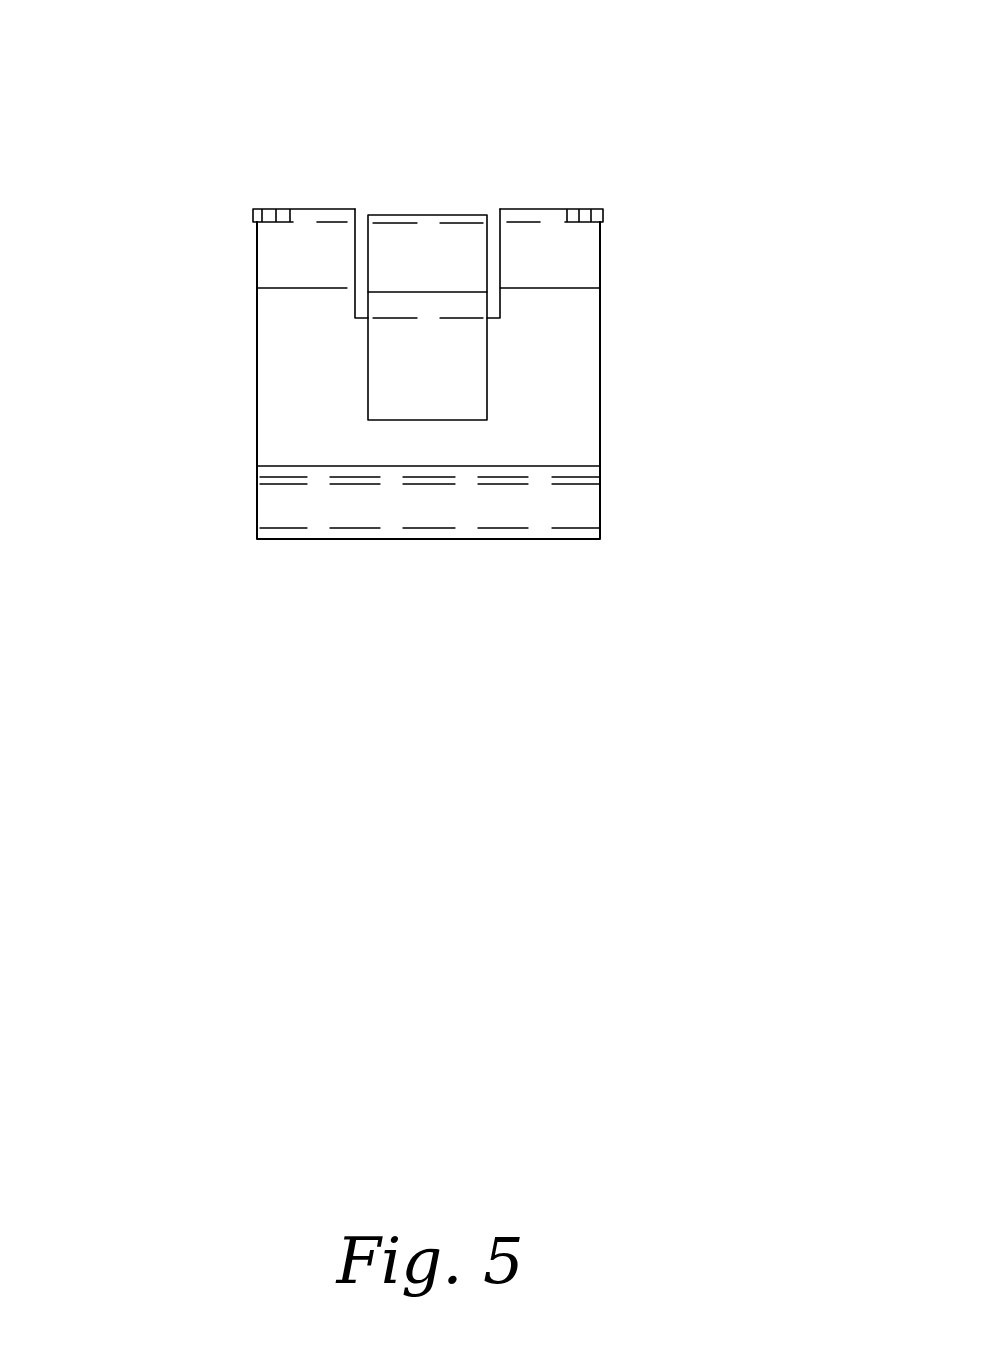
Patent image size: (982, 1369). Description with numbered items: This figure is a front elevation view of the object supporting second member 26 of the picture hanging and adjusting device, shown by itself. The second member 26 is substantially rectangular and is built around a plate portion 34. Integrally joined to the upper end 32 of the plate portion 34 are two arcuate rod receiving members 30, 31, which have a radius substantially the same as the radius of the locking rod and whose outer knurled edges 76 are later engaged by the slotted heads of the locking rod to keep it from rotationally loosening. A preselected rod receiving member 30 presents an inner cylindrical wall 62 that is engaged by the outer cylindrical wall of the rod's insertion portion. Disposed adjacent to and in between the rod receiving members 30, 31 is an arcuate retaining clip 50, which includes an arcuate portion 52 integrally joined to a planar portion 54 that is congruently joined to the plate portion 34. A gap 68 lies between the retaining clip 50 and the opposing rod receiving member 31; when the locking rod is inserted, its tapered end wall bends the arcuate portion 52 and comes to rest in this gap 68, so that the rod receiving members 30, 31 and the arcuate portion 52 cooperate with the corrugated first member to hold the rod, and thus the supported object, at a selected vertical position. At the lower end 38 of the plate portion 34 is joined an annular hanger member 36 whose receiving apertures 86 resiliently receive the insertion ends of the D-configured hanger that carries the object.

The second member 26 is at (690, 381).
The arcuate rod receiving member 30 is at (552, 209).
The arcuate rod receiving member 31 is at (305, 209).
The upper end 32 is at (551, 288).
The plate portion 34 is at (582, 340).
The annular hanger member 36 is at (432, 503).
The lower end 38 is at (600, 465).
The arcuate retaining clip 50 is at (455, 214).
The arcuate portion 52 is at (428, 248).
The planar portion 54 is at (452, 402).
The inner cylindrical wall 62 is at (600, 272).
The gap 68 is at (358, 214).
The outer knurled edges 76 is at (257, 248).
The receiving apertures 86 is at (602, 503).